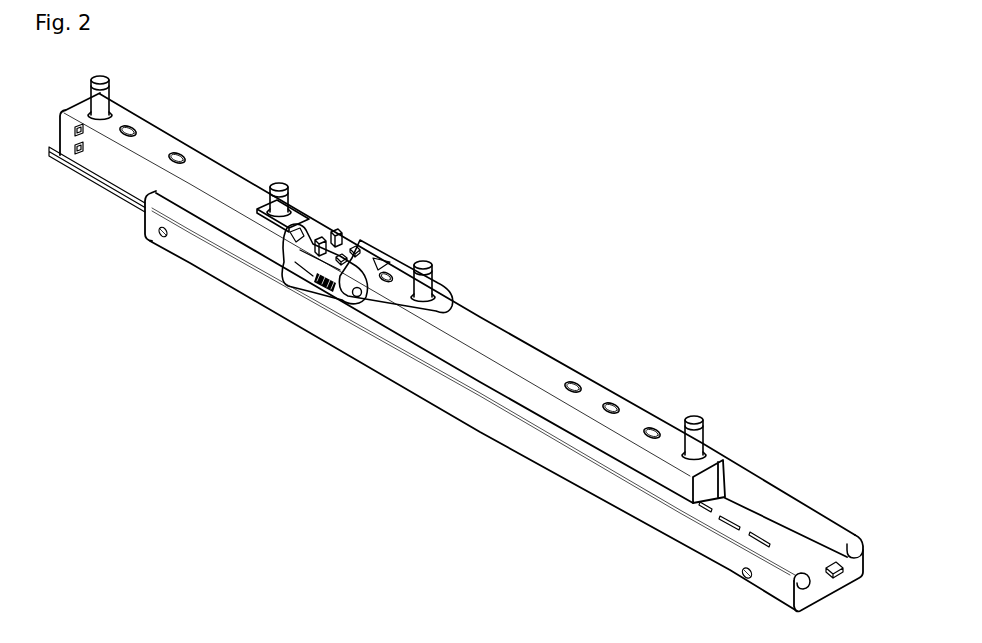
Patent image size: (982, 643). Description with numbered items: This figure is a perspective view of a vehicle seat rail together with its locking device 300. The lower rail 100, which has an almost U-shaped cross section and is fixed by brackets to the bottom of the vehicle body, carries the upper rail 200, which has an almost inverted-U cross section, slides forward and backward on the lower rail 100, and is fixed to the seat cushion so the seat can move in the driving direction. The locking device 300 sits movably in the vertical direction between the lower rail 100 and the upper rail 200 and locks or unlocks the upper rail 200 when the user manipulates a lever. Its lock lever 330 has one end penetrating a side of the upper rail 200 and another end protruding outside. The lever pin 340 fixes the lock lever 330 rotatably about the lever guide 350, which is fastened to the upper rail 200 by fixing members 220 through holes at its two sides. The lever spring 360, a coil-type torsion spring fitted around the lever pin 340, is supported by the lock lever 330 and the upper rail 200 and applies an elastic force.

The lower rail 100 is at (228, 268).
The upper rail 200 is at (228, 184).
The fixing members 220 is at (436, 283).
The locking device 300 is at (371, 269).
The lock lever 330 is at (299, 283).
The lever pin 340 is at (302, 228).
The lever guide 350 is at (402, 271).
The lever spring 360 is at (331, 236).